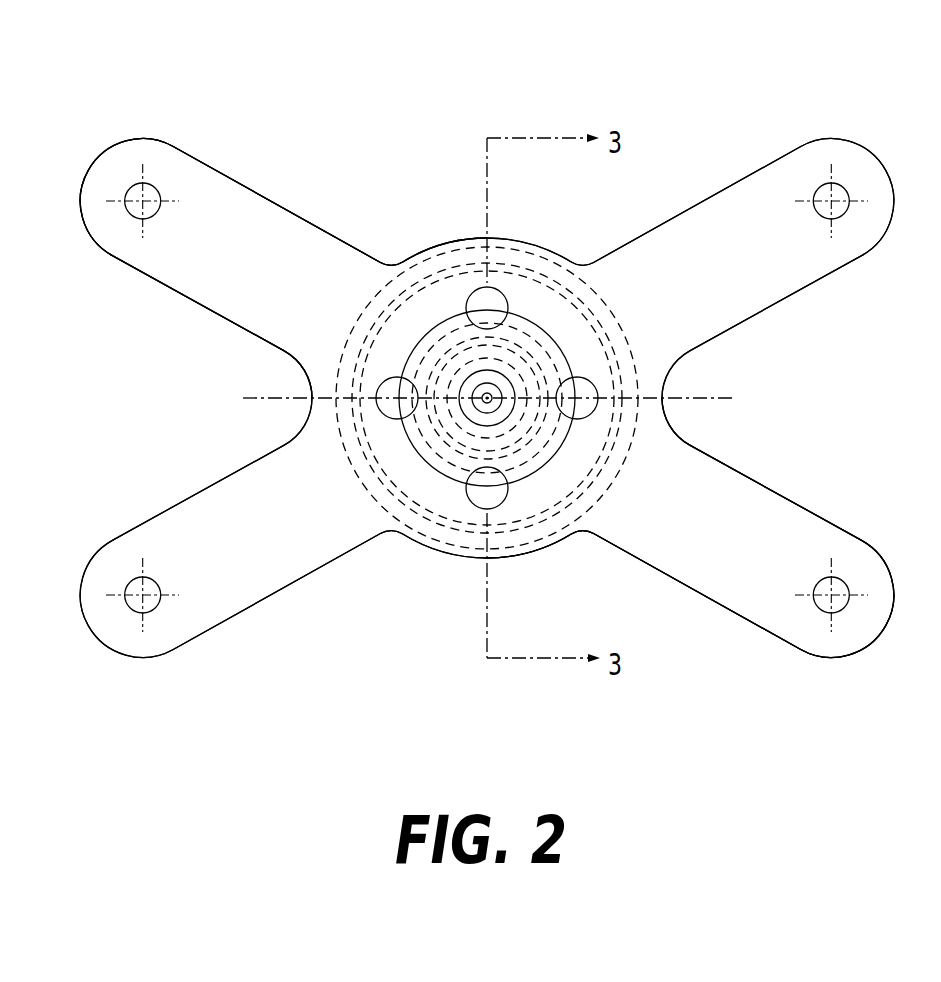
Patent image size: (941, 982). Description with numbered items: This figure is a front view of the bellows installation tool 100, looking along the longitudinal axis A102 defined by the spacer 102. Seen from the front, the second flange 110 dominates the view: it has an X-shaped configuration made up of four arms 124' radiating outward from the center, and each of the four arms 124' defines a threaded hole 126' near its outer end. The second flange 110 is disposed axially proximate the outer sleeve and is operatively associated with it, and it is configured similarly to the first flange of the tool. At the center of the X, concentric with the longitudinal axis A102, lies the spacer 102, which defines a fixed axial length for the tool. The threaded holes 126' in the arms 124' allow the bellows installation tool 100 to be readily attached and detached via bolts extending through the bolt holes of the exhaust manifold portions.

The bellows installation tool 100 is at (709, 60).
The second flange 110 is at (249, 176).
The arms 124' is at (487, 445).
The threaded hole 126' is at (493, 357).
The spacer 102 is at (461, 428).
The longitudinal axis A102 is at (487, 398).